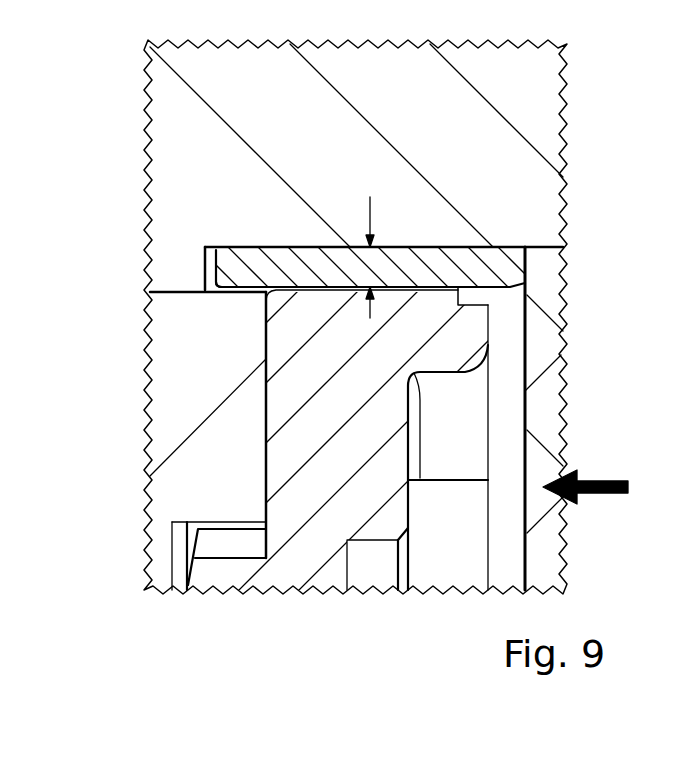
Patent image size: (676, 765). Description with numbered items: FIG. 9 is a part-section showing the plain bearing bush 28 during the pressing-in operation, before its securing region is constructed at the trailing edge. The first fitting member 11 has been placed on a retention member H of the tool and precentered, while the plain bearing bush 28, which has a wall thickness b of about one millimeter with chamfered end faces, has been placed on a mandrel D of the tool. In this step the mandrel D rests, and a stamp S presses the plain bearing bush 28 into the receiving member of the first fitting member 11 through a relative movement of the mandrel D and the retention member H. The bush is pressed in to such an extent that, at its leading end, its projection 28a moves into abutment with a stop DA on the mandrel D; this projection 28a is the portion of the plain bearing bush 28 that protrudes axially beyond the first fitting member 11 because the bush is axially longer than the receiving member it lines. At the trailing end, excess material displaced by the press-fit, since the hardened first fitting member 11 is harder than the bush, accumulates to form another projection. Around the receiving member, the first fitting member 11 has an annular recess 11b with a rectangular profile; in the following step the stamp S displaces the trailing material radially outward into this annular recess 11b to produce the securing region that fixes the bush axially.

The mandrel D is at (212, 170).
The stop DA is at (205, 265).
The plain bearing bush 28 is at (427, 238).
The projection 28a is at (238, 282).
The wall thickness b is at (354, 257).
The retention member H is at (177, 423).
The first fitting member 11 is at (430, 388).
The annular recess 11b is at (473, 297).
The stamp S is at (543, 342).